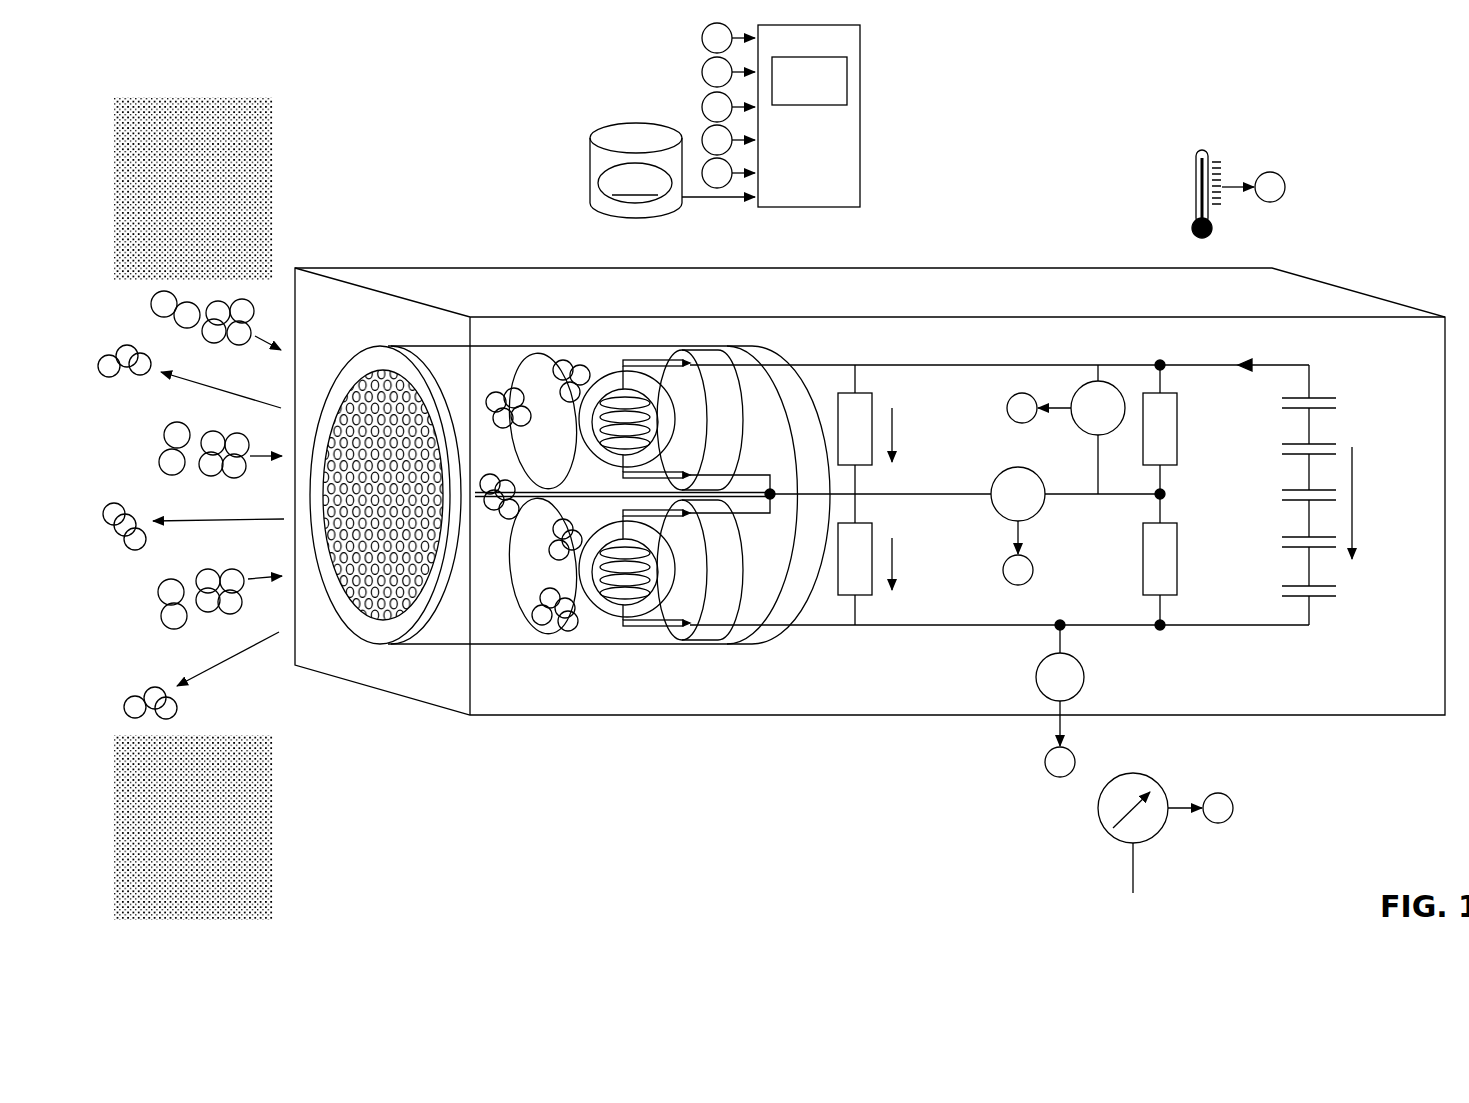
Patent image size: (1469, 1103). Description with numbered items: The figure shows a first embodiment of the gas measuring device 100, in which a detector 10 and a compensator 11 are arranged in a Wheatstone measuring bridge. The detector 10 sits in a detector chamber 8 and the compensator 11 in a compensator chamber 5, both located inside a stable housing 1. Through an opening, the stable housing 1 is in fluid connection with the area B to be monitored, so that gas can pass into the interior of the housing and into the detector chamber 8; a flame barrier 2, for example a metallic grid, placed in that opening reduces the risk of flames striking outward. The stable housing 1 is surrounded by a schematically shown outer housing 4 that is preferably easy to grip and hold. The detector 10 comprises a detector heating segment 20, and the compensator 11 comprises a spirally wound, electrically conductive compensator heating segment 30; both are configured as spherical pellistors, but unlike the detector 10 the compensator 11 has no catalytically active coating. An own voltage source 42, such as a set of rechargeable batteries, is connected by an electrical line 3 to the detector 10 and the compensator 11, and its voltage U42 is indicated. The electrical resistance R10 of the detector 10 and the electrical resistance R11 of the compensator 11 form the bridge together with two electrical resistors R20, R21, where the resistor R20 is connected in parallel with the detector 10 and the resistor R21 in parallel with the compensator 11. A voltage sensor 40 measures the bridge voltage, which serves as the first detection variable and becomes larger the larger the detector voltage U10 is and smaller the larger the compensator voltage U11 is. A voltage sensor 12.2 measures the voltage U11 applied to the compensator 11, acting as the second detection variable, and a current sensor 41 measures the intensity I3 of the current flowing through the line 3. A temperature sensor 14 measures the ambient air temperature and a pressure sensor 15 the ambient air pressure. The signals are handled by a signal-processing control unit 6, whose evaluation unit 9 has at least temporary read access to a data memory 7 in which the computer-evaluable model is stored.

The stable housing 1 is at (440, 645).
The flame barrier 2 is at (363, 632).
The electrical line 3 is at (1020, 365).
The outer housing 4 is at (542, 716).
The compensator chamber 5 is at (513, 372).
The signal-processing control unit 6 is at (860, 45).
The data memory 7 is at (614, 125).
The detector chamber 8 is at (505, 573).
The evaluation unit 9 is at (802, 97).
The detector 10 is at (596, 620).
The compensator 11 is at (609, 367).
The voltage sensor 12.2 is at (1108, 382).
The temperature sensor 14 is at (1204, 150).
The pressure sensor 15 is at (1150, 776).
The detector heating segment 20 is at (636, 608).
The compensator heating segment 30 is at (637, 373).
The voltage sensor 40 is at (1042, 510).
The current sensor 41 is at (1083, 685).
The voltage source 42 is at (1352, 422).
The gas measuring device 100 is at (838, 802).
The electrical resistance of the detector R10 is at (868, 595).
The electrical resistance of the compensator R11 is at (858, 393).
The electrical resistor R20 is at (1177, 568).
The electrical resistor R21 is at (1177, 420).
The detector voltage U10 is at (897, 568).
The compensator voltage U11 is at (897, 437).
The voltage of the voltage source U42 is at (1356, 505).
The current intensity I3 is at (946, 365).
The area to be monitored B is at (262, 165).